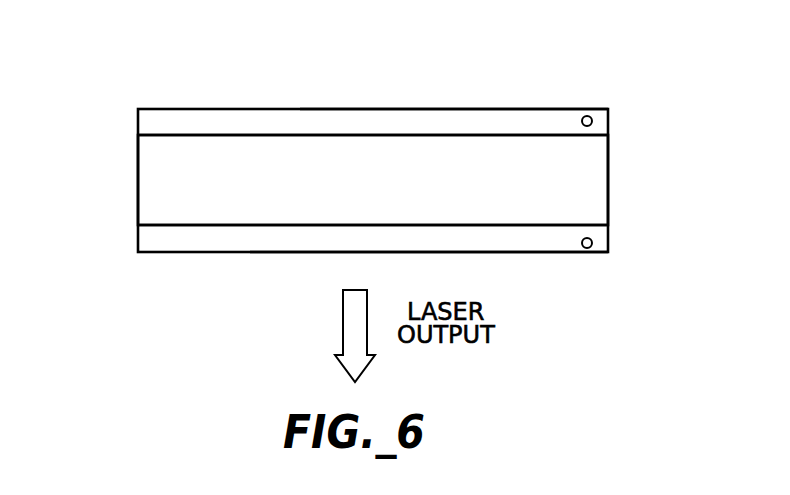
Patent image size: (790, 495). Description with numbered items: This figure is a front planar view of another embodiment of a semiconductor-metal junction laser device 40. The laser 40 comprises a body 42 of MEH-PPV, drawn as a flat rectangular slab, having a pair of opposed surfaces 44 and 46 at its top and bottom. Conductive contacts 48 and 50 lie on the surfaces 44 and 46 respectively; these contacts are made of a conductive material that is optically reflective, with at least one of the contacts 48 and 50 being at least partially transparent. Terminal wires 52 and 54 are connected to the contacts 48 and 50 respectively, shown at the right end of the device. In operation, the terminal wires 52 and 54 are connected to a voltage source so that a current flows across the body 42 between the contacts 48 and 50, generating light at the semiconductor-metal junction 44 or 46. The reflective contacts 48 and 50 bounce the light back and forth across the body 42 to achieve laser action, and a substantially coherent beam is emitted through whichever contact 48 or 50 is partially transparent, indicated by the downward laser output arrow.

The semiconductor-metal junction laser device 40 is at (388, 106).
The body 42 is at (153, 192).
The surface 44 is at (193, 134).
The surface 46 is at (223, 225).
The conductive contact 48 is at (457, 120).
The conductive contact 50 is at (365, 235).
The terminal wire 52 is at (588, 116).
The terminal wire 54 is at (590, 248).